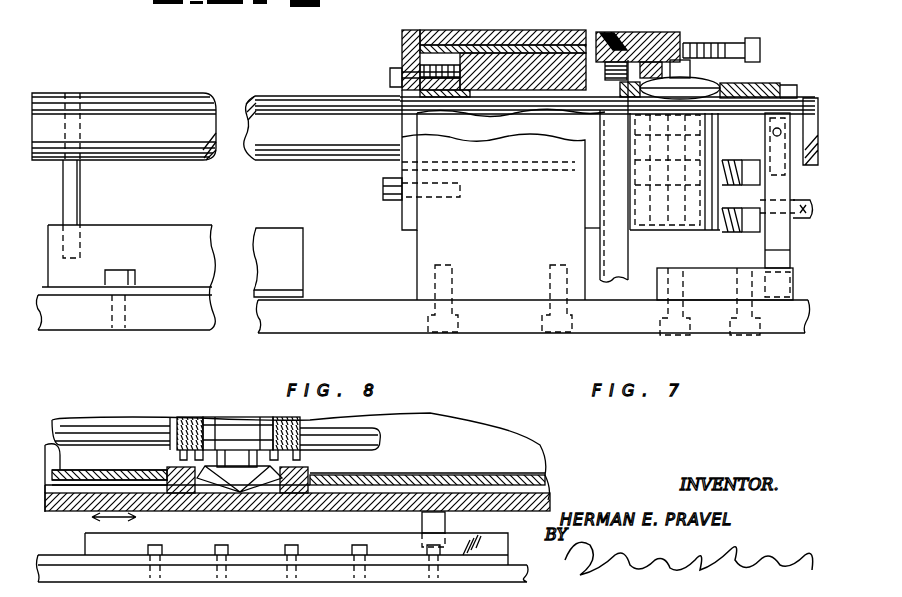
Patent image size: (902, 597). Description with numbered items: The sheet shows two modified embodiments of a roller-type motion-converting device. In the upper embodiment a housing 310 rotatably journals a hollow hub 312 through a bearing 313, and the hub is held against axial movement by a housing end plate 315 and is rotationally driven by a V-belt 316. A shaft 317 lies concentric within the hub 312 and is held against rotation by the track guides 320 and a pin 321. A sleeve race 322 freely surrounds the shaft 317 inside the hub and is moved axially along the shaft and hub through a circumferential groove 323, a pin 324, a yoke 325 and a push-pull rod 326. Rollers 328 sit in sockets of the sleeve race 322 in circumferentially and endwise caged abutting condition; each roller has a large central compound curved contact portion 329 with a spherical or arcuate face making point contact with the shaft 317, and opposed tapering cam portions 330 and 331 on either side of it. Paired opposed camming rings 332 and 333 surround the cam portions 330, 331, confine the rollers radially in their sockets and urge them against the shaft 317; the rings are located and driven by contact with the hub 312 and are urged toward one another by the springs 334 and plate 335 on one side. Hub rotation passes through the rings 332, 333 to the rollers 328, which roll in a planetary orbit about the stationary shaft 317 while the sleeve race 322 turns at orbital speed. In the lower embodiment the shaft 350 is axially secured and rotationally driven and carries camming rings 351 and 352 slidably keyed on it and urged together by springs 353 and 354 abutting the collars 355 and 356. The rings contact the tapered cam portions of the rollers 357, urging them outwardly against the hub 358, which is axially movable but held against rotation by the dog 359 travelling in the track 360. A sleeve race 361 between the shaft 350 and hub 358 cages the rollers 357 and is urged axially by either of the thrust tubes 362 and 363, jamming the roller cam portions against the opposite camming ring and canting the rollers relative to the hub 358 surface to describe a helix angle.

In FIG. 7, the housing 310 is at (425, 252).
In FIG. 7, the hollow hub 312 is at (540, 48).
In FIG. 7, the bearing 313 is at (483, 30).
In FIG. 7, the housing end plate 315 is at (410, 30).
In FIG. 7, the V-belt 316 is at (626, 32).
In FIG. 7, the shaft 317 is at (316, 110).
In FIG. 7, the track guides 320 is at (170, 238).
In FIG. 7, the pin 321 is at (68, 208).
In FIG. 7, the sleeve race 322 is at (790, 84).
In FIG. 7, the circumferential groove 323 is at (775, 83).
In FIG. 7, the pin 324 is at (773, 133).
In FIG. 7, the yoke 325 is at (772, 243).
In FIG. 7, the push-pull rod 326 is at (792, 220).
In FIG. 7, the rollers 328 is at (640, 95).
In FIG. 7, the central compound curved contact portion 329 is at (668, 220).
In FIG. 7, the cam portion 330 is at (741, 196).
In FIG. 7, the cam portion 331 is at (622, 197).
In FIG. 7, the camming ring 332 is at (680, 62).
In FIG. 7, the camming ring 333 is at (660, 62).
In FIG. 7, the springs 334 is at (740, 40).
In FIG. 7, the plate 335 is at (705, 63).
In FIG. 8, the shaft 350 is at (150, 425).
In FIG. 8, the camming ring 351 is at (292, 493).
In FIG. 8, the camming ring 352 is at (185, 493).
In FIG. 8, the spring 353 is at (290, 425).
In FIG. 8, the spring 354 is at (200, 420).
In FIG. 8, the collar 355 is at (362, 424).
In FIG. 8, the collar 356 is at (180, 418).
In FIG. 8, the rollers 357 is at (240, 493).
In FIG. 8, the hub 358 is at (548, 503).
In FIG. 8, the dog 359 is at (440, 522).
In FIG. 8, the track 360 is at (498, 545).
In FIG. 8, the sleeve race 361 is at (300, 497).
In FIG. 8, the thrust tube 362 is at (62, 485).
In FIG. 8, the thrust tube 363 is at (452, 460).